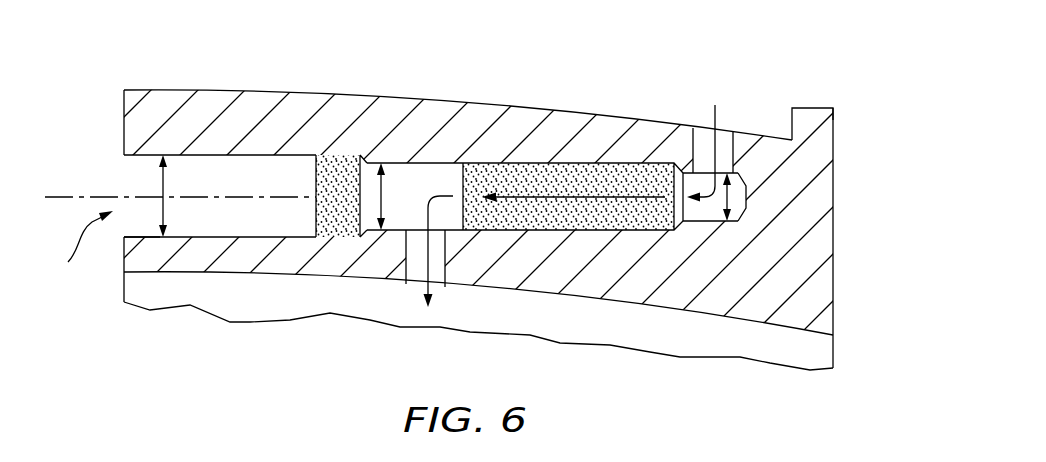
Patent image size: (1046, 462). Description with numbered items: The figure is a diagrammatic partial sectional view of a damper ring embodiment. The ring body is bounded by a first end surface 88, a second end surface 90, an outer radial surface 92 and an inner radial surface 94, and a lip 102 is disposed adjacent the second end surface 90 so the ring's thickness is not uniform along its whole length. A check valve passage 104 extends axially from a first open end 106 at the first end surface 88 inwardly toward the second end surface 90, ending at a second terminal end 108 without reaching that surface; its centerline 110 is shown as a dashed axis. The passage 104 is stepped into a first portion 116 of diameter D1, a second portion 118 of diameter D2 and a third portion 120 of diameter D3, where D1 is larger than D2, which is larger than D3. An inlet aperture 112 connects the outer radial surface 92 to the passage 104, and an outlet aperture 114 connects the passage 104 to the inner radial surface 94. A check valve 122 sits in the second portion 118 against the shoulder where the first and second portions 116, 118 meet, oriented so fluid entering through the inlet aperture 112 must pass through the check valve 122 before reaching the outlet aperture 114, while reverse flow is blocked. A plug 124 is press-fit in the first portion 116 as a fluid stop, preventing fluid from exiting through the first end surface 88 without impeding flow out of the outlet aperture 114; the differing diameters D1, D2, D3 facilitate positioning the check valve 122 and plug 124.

The first end surface 88 is at (124, 108).
The second end surface 90 is at (833, 288).
The outer radial surface 92 is at (412, 98).
The inner radial surface 94 is at (318, 278).
The lip 102 is at (812, 120).
The check valve passage 104 is at (71, 252).
The first open end 106 is at (125, 233).
The second terminal end 108 is at (746, 196).
The centerline 110 is at (48, 192).
The inlet aperture 112 is at (703, 138).
The outlet aperture 114 is at (433, 268).
The first portion 116 is at (257, 218).
The second portion 118 is at (433, 180).
The third portion 120 is at (710, 208).
The check valve 122 is at (580, 185).
The plug 124 is at (328, 180).
The diameter of first portion D1 is at (180, 196).
The diameter of second portion D2 is at (396, 196).
The diameter of third portion D3 is at (738, 198).